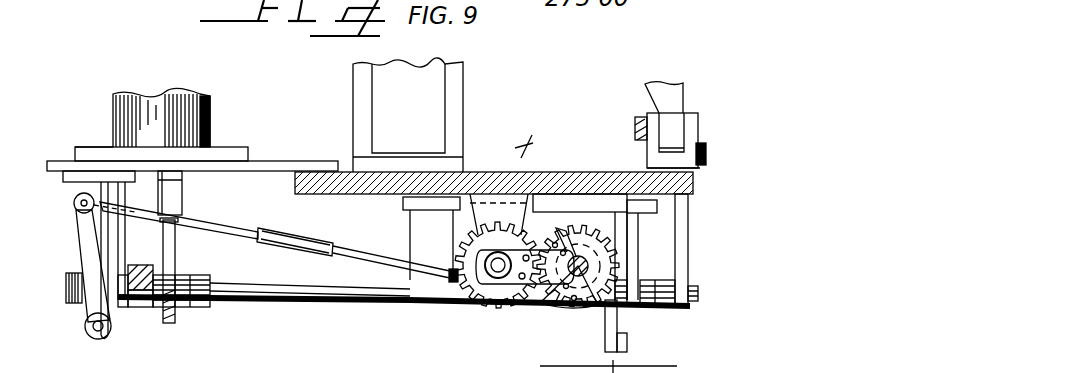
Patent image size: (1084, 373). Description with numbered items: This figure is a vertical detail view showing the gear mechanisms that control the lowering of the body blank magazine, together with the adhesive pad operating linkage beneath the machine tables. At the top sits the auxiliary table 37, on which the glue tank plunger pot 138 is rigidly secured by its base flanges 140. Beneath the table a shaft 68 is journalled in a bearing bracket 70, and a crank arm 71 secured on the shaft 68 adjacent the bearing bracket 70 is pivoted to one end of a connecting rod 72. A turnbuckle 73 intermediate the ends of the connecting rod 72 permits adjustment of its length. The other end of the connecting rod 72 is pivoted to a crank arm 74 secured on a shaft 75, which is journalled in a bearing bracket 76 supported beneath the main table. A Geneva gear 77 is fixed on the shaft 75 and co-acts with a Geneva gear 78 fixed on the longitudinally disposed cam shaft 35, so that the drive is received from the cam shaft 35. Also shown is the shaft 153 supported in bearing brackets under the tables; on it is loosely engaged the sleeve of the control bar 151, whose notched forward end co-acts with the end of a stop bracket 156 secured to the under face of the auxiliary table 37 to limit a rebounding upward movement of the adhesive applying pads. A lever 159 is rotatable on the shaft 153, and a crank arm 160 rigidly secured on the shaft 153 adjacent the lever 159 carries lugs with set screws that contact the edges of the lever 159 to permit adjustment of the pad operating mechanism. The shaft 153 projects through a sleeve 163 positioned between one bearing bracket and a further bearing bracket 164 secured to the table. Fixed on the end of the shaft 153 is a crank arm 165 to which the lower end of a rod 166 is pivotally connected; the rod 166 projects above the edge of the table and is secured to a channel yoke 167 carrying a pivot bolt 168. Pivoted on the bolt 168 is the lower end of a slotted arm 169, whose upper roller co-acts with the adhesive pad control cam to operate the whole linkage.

The cam shaft 35 is at (582, 272).
The auxiliary table 37 is at (303, 143).
The shaft 68 is at (98, 338).
The bearing bracket 70 is at (76, 307).
The crank arm 71 is at (80, 222).
The connecting rod 72 is at (222, 225).
The turnbuckle 73 is at (318, 241).
The crank arm 74 is at (448, 300).
The shaft 75 is at (497, 275).
The bearing bracket 76 is at (486, 200).
The Geneva gear 77 is at (470, 234).
The Geneva gear 78 is at (612, 257).
The plunger pot 138 is at (205, 75).
The base flanges 140 is at (88, 150).
The control bar 151 is at (170, 326).
The shaft 153 is at (323, 301).
The stop bracket 156 is at (180, 196).
The lever 159 is at (135, 265).
The crank arm 160 is at (155, 277).
The sleeve 163 is at (544, 306).
The bearing bracket 164 is at (430, 288).
The crank arm 165 is at (675, 312).
The rod 166 is at (686, 278).
The channel yoke 167 is at (690, 136).
The pivot bolt 168 is at (636, 123).
The arm 169 is at (673, 107).